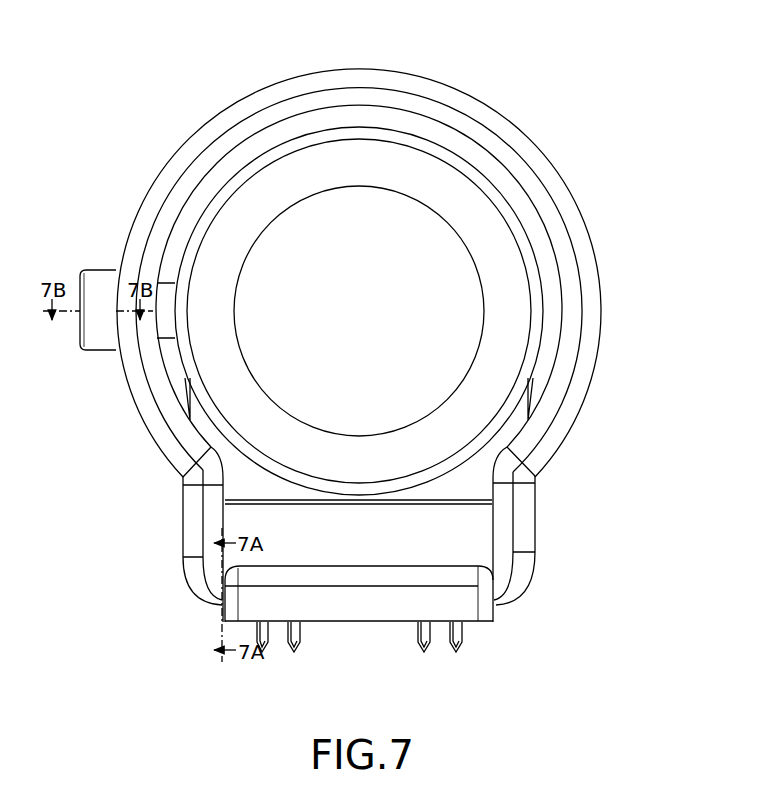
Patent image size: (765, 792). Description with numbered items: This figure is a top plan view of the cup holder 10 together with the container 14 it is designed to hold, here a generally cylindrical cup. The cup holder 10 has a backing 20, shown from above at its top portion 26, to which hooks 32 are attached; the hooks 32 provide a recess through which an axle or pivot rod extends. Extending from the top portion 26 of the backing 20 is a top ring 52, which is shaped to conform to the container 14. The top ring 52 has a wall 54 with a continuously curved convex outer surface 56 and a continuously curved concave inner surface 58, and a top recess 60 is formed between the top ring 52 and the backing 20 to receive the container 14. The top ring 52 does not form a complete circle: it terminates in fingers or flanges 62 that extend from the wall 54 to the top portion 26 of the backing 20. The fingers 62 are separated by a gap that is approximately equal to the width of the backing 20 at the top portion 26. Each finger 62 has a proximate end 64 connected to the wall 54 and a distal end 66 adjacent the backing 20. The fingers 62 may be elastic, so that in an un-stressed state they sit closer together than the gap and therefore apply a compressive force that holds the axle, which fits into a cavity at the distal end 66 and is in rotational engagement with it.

The cup holder 10 is at (630, 462).
The container 14 is at (460, 154).
The backing 20 is at (365, 632).
The top portion 26 is at (223, 620).
The hooks 32 is at (473, 618).
The top ring 52 is at (600, 347).
The wall 54 is at (330, 70).
The outer surface 56 is at (558, 177).
The inner surface 58 is at (545, 238).
The top recess 60 is at (220, 174).
The fingers 62 is at (535, 545).
The proximate end 64 is at (176, 496).
The distal end 66 is at (178, 593).